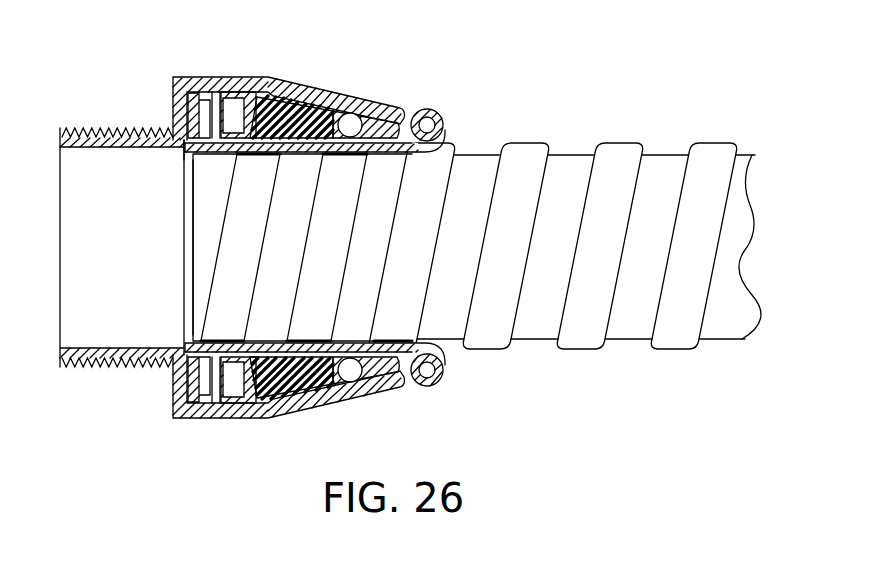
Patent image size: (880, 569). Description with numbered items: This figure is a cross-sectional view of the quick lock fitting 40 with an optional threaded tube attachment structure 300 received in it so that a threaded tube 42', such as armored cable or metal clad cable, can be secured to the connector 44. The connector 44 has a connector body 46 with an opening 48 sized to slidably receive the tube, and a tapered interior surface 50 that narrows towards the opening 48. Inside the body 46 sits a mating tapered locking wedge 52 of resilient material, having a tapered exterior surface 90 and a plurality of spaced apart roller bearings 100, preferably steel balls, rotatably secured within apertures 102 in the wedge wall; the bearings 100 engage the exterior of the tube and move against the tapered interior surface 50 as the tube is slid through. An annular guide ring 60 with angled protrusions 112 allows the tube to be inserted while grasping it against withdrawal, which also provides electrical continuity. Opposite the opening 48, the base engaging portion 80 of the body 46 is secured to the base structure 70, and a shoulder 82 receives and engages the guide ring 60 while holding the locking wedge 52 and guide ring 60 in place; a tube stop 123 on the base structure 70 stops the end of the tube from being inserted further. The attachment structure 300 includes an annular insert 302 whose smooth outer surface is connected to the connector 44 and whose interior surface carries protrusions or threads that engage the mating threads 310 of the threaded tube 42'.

The coupling assembly 40 is at (453, 65).
The threaded tube 42' is at (477, 211).
The connector 44 is at (163, 430).
The connector body 46 is at (277, 98).
The opening 48 is at (433, 143).
The tapered interior surface 50 is at (300, 112).
The tapered locking wedge 52 is at (357, 380).
The guide ring 60 is at (268, 97).
The base structure 70 is at (105, 128).
The base engaging portion 80 is at (200, 77).
The shoulder 82 is at (190, 109).
The tapered exterior surface 90 is at (317, 380).
The roller bearings 100 is at (374, 237).
The apertures 102 is at (342, 110).
The protrusions 112 is at (221, 132).
The tube stop 123 is at (194, 158).
The threaded tube attachment structure 300 is at (457, 378).
The annular insert 302 is at (433, 112).
The mating threads 310 is at (375, 216).